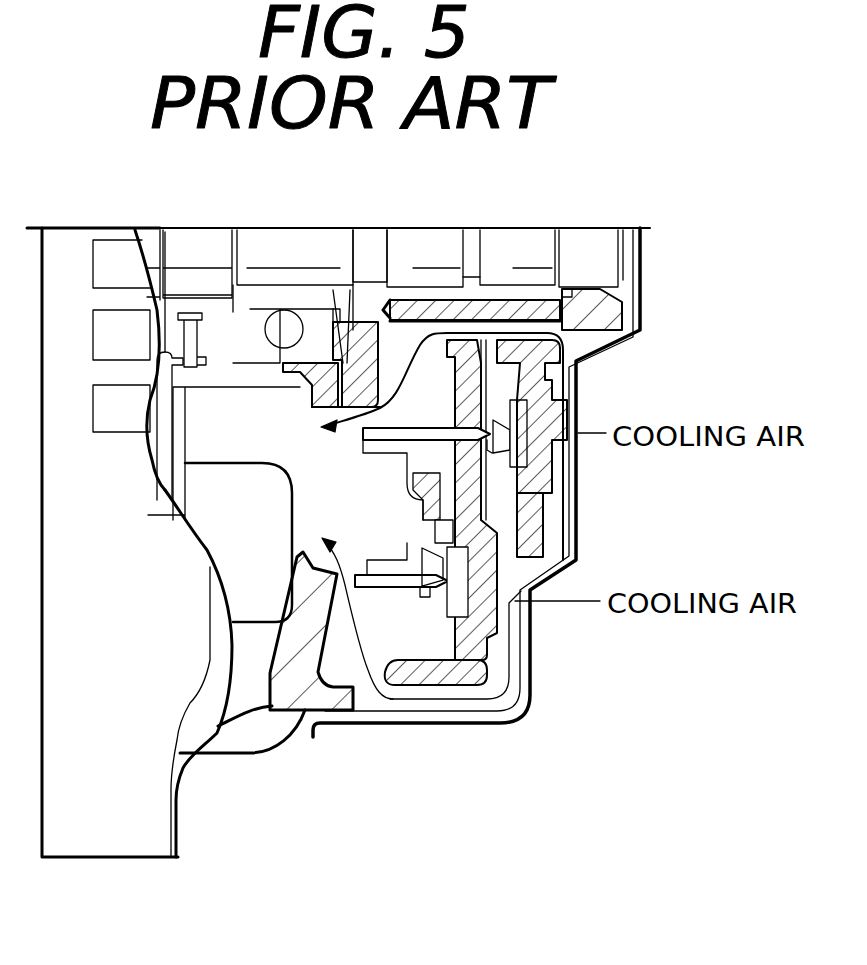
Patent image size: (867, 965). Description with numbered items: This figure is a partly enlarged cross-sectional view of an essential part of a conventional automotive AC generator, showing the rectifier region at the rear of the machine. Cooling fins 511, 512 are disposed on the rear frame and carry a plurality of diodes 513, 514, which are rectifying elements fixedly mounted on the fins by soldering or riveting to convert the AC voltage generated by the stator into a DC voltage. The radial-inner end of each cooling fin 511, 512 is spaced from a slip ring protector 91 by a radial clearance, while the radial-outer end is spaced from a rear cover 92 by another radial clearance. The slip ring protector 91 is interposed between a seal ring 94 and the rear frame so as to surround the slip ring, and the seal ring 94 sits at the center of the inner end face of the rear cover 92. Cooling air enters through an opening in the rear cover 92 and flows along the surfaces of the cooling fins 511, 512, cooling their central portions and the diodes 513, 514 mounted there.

The slip ring protector 91 is at (518, 310).
The rear cover 92 is at (530, 667).
The seal ring 94 is at (620, 310).
The cooling fin 511 is at (420, 677).
The cooling fin 512 is at (527, 523).
The diode 513 is at (457, 600).
The diode 514 is at (525, 452).